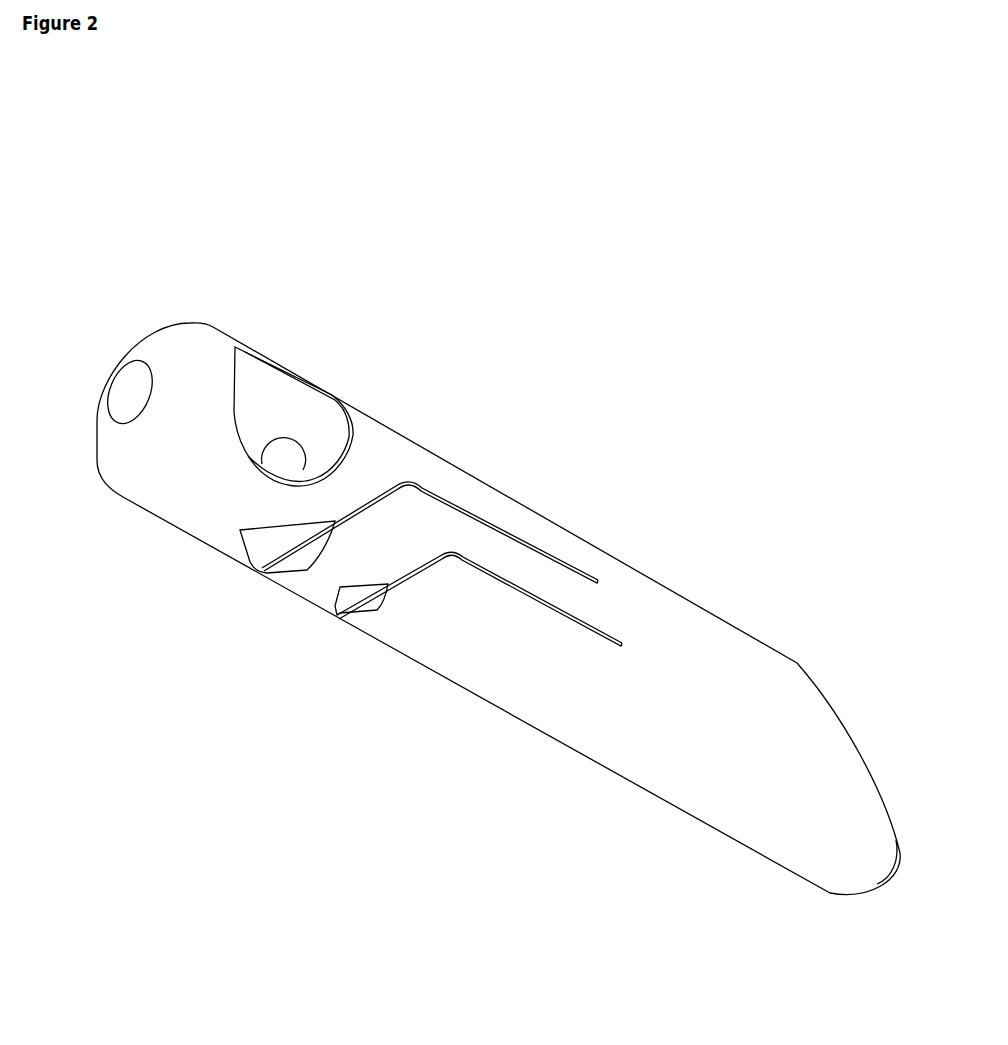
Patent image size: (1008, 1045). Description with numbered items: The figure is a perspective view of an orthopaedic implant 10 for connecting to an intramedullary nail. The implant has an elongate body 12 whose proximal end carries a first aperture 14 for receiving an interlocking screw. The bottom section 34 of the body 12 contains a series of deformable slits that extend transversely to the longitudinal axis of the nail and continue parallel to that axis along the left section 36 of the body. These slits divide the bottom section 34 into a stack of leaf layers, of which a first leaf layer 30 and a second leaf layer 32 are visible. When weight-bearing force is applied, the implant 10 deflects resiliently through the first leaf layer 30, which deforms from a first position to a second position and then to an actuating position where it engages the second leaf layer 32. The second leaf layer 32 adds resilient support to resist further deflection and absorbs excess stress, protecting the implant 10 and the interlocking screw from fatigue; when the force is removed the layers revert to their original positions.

The orthopaedic implant 10 is at (497, 317).
The body 12 is at (373, 419).
The first aperture 14 is at (282, 400).
The first leaf layer 30 is at (286, 558).
The second leaf layer 32 is at (362, 602).
The bottom section 34 is at (486, 703).
The left section 36 is at (670, 633).